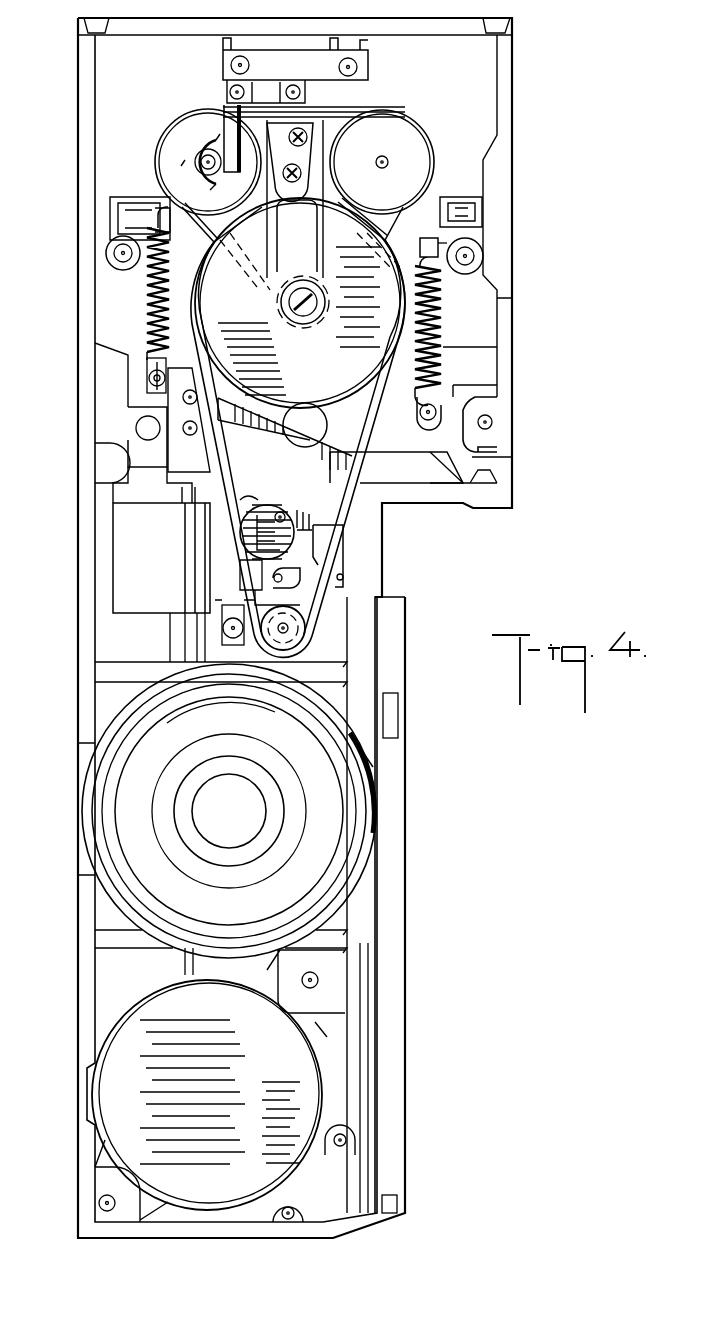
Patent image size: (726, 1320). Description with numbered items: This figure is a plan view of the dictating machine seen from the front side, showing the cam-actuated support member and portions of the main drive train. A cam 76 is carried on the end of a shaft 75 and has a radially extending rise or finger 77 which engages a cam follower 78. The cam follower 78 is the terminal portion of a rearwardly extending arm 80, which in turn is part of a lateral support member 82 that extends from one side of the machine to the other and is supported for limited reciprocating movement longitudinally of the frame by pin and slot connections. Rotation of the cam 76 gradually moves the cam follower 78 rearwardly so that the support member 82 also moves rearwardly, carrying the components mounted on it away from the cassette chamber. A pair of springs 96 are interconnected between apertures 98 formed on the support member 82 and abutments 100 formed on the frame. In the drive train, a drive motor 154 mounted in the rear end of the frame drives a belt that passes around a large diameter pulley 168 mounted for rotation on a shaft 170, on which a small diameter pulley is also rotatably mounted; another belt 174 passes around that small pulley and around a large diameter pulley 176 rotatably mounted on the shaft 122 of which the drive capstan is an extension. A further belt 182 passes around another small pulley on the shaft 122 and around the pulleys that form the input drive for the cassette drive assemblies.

The abutments 100 is at (160, 210).
The belt 182 is at (400, 217).
The springs 96 is at (170, 328).
The apertures 98 is at (150, 380).
The lateral support member 82 is at (472, 457).
The shaft 122 is at (290, 300).
The large diameter pulley 176 is at (318, 370).
The belt 174 is at (368, 435).
The cam 76 is at (252, 500).
The shaft 75 is at (293, 500).
The finger 77 is at (297, 528).
The rearwardly extending arm 80 is at (315, 552).
The cam follower 78 is at (340, 577).
The shaft 170 is at (290, 632).
The large diameter pulley 168 is at (277, 637).
The drive motor 154 is at (310, 1088).